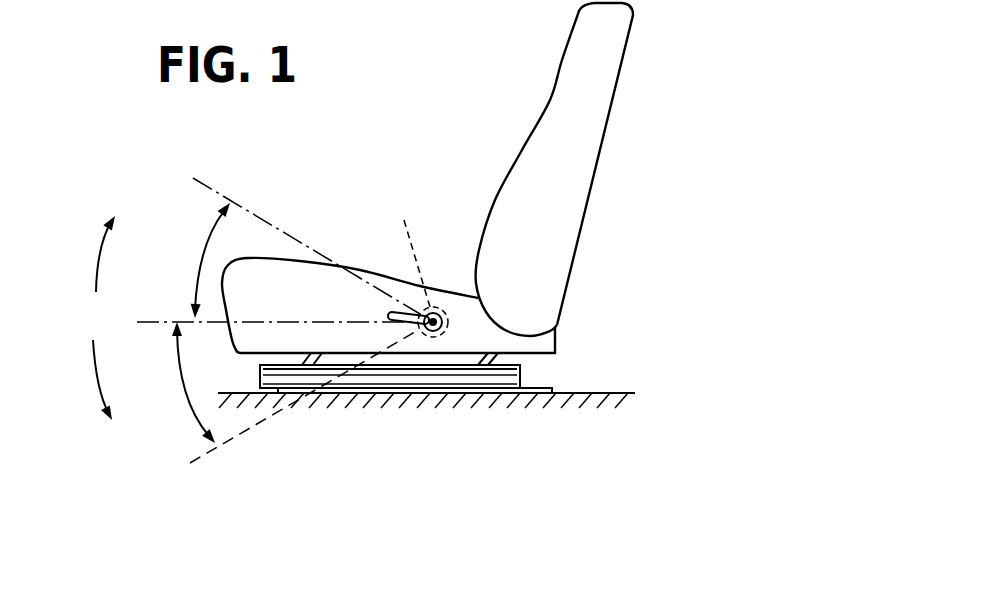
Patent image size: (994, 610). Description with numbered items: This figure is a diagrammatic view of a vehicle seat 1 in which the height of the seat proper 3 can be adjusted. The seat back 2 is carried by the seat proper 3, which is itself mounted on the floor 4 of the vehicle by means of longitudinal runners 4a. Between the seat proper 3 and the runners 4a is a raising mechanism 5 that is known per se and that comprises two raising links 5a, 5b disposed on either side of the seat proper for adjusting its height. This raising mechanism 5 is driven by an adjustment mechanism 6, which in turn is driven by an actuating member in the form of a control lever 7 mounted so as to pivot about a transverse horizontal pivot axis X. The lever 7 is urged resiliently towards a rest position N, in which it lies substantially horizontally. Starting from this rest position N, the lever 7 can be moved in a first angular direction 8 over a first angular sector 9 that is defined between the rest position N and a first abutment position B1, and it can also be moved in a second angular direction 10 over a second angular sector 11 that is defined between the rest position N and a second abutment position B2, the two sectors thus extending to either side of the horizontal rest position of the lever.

The vehicle seat 1 is at (388, 155).
The seat back 2 is at (567, 202).
The seat proper 3 is at (268, 268).
The floor 4 is at (583, 398).
The longitudinal runners 4a is at (574, 350).
The raising mechanism 5 is at (238, 371).
The raising link 5a is at (318, 362).
The raising link 5b is at (496, 362).
The adjustment mechanism 6 is at (411, 247).
The control lever 7 is at (398, 312).
The first angular direction 8 is at (98, 260).
The first angular sector 9 is at (203, 265).
The second angular direction 10 is at (98, 372).
The second angular sector 11 is at (187, 390).
The rest position N is at (251, 321).
The first abutment position B1 is at (284, 233).
The second abutment position B2 is at (280, 407).
The pivot axis X is at (437, 311).